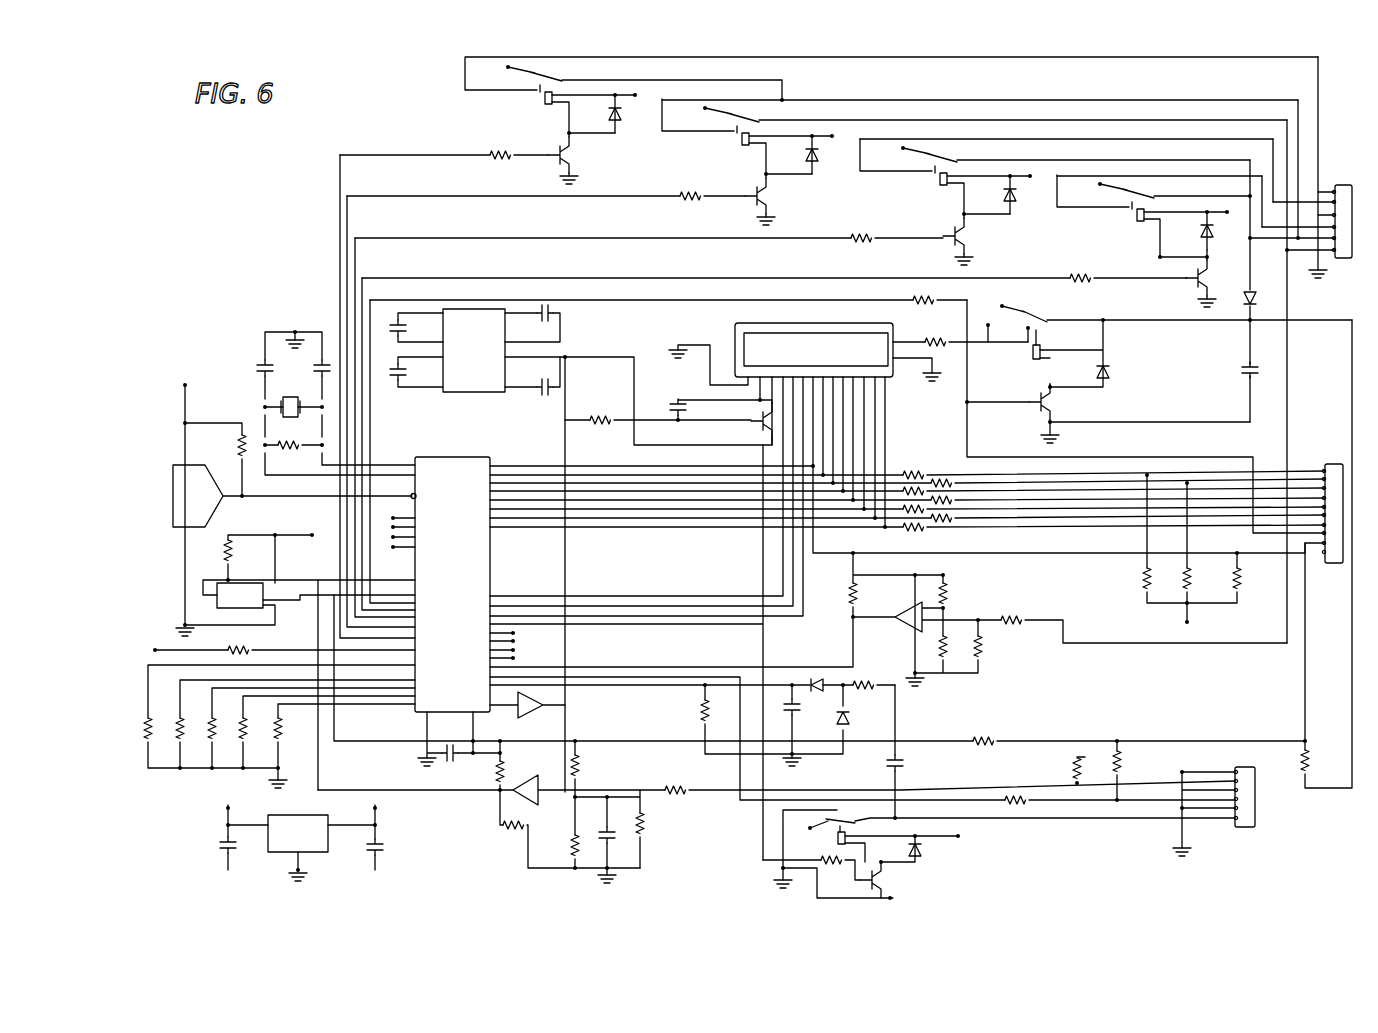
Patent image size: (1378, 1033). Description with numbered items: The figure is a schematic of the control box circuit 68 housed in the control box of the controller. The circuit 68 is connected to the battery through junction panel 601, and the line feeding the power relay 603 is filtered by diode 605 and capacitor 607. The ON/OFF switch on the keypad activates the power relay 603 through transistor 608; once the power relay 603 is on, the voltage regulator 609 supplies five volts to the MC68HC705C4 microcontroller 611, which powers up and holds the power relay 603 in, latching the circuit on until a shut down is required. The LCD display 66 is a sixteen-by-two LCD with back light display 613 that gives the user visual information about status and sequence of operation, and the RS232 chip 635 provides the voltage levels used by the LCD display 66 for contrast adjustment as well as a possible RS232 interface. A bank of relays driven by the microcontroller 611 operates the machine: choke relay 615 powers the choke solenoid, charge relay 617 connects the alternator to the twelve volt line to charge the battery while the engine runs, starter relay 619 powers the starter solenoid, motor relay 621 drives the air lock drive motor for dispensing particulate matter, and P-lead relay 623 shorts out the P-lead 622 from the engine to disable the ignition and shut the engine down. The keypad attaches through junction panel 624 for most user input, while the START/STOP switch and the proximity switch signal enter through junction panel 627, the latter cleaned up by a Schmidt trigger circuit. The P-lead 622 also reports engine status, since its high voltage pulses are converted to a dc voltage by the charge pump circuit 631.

The junction panel 601 is at (1345, 262).
The power relay 603 is at (1035, 313).
The diode 605 is at (1246, 308).
The capacitor 607 is at (1248, 376).
The transistor 608 is at (1058, 413).
The voltage regulator 609 is at (383, 834).
The microcontroller 611 is at (452, 458).
The back light display 613 is at (735, 333).
The choke relay 615 is at (533, 86).
The charge relay 617 is at (741, 130).
The starter relay 619 is at (940, 180).
The motor relay 621 is at (1142, 214).
The P-lead 622 is at (783, 827).
The P-lead relay 623 is at (893, 892).
The junction panel 624 is at (1335, 564).
The junction panel 627 is at (1250, 828).
The charge pump circuit 631 is at (898, 727).
The RS232 chip 635 is at (448, 395).
The LCD display 66 is at (893, 378).
The control box circuit 68 is at (1337, 420).